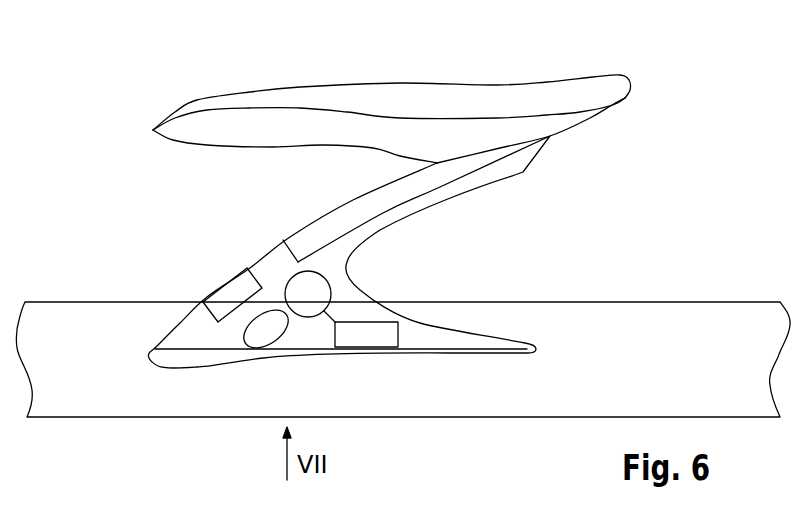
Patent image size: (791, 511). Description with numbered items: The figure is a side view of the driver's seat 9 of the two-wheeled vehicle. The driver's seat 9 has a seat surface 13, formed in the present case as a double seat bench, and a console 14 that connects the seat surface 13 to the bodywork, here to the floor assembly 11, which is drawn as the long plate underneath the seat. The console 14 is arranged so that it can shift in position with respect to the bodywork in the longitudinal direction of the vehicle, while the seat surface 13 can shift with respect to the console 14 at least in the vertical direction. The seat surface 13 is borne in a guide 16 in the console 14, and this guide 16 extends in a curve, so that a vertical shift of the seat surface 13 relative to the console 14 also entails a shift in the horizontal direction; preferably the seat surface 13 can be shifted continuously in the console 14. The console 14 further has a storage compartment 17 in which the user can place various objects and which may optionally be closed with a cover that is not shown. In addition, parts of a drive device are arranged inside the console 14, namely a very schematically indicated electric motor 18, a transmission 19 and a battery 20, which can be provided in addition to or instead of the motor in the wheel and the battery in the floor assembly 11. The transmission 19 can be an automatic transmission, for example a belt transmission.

The driver's seat 9 is at (346, 199).
The floor assembly 11 is at (603, 302).
The seat surface 13 is at (494, 105).
The console 14 is at (272, 258).
The guide 16 is at (407, 186).
The storage compartment 17 is at (230, 297).
The electric motor 18 is at (323, 288).
The transmission 19 is at (253, 335).
The battery 20 is at (388, 330).